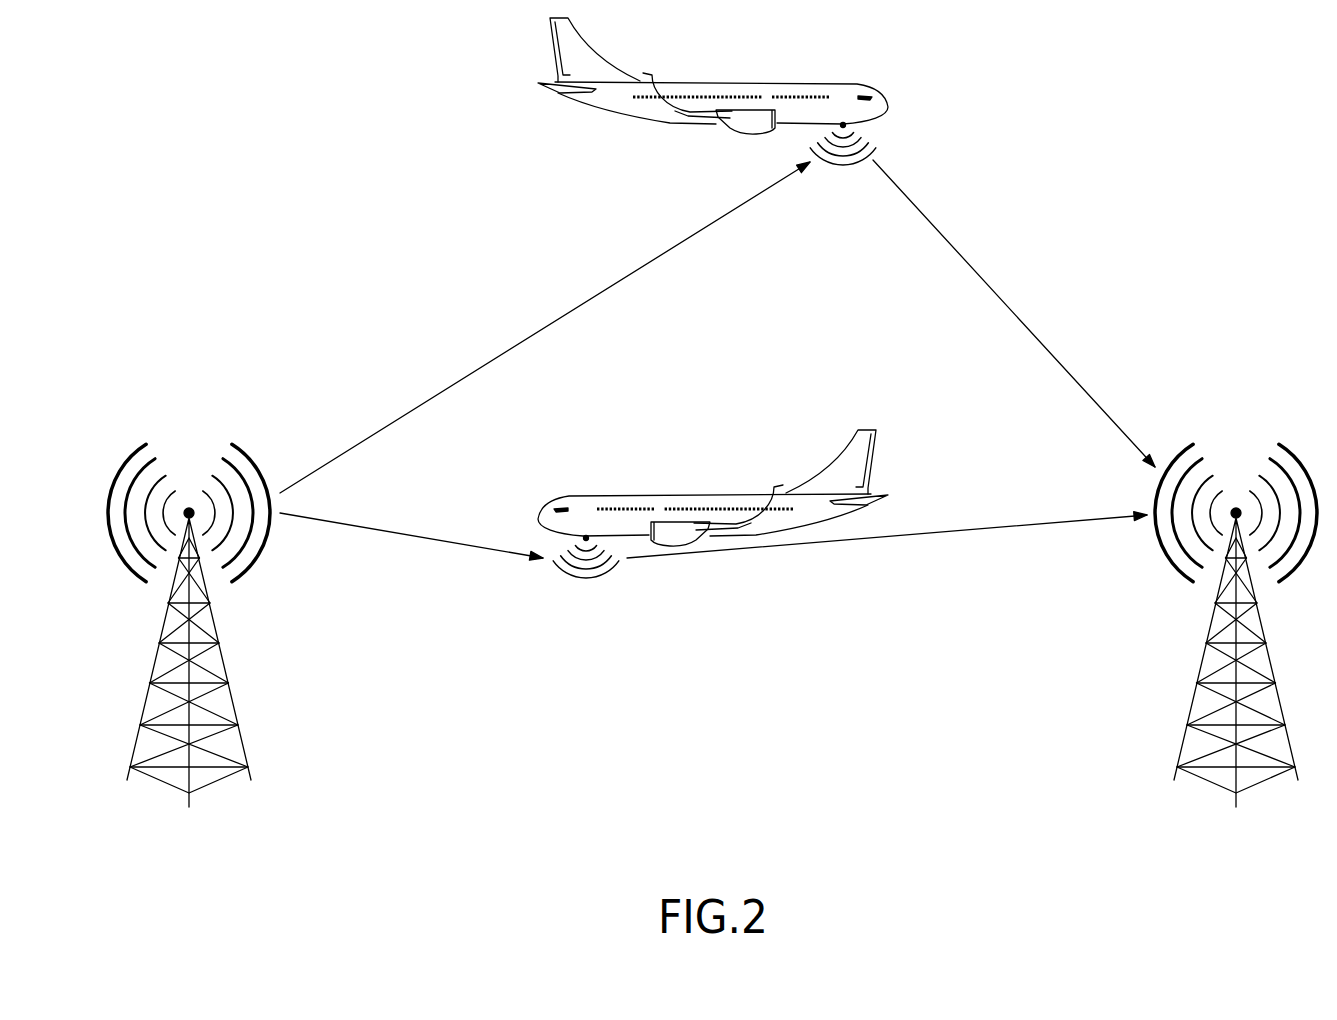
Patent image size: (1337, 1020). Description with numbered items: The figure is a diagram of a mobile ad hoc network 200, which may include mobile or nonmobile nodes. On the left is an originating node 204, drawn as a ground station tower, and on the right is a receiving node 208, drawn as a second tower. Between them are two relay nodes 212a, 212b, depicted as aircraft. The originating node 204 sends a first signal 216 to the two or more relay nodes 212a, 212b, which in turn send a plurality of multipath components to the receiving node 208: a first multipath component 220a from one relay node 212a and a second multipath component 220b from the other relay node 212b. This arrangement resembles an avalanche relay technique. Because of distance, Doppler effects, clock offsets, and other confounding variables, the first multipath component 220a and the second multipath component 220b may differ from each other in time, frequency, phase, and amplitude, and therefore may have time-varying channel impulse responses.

The mobile ad hoc network 200 is at (249, 122).
The originating node 204 is at (148, 672).
The receiving node 208 is at (1193, 672).
The relay node 212a is at (713, 107).
The relay node 212b is at (713, 518).
The first signal 216 is at (545, 364).
The first multipath component 220a is at (1014, 313).
The second multipath component 220b is at (887, 539).